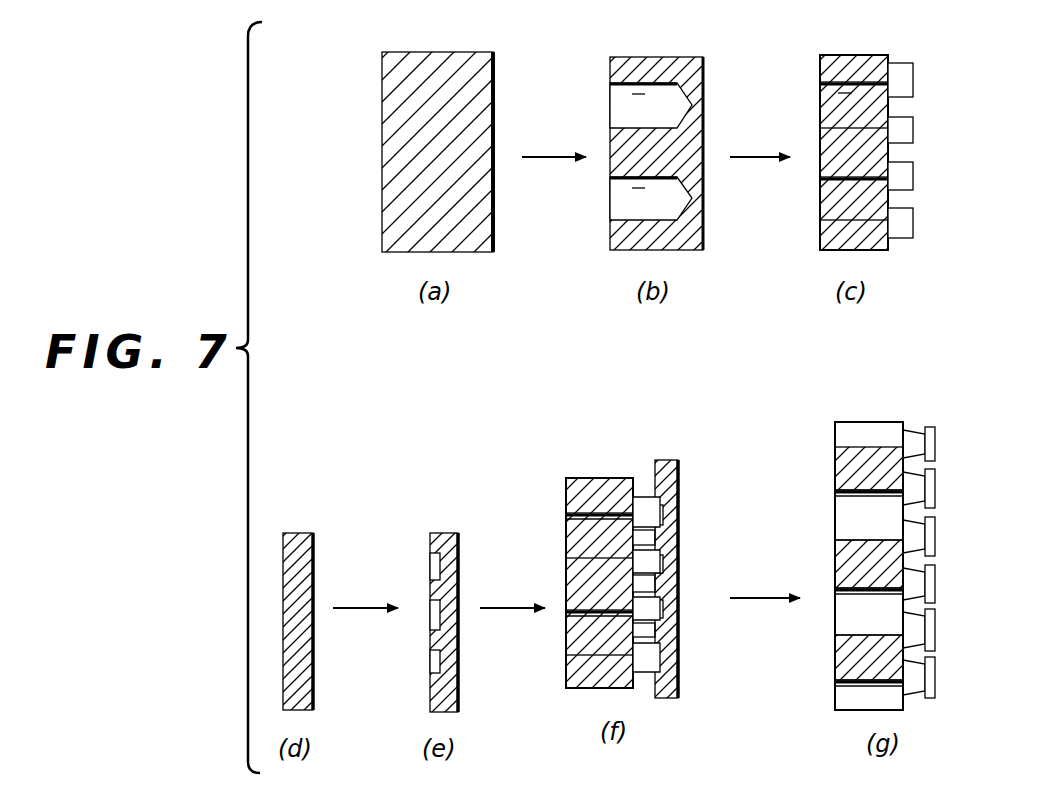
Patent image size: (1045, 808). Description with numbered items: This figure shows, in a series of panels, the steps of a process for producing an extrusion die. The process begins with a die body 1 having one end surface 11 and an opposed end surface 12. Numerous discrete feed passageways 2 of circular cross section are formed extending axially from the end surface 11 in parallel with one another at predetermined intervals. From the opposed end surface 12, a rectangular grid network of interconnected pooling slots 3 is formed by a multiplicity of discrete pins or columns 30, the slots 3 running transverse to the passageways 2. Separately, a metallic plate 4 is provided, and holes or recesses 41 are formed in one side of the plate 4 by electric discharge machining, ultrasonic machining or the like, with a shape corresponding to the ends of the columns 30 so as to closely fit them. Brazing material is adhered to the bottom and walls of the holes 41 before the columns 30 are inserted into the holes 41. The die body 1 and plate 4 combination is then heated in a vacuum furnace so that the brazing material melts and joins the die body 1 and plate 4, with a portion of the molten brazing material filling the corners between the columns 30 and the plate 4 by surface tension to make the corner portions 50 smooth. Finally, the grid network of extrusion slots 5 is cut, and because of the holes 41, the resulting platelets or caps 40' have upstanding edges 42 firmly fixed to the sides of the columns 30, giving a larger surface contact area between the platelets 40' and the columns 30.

The die body 1 is at (888, 254).
The feed passageways 2 is at (610, 90).
The pooling slots 3 is at (905, 100).
The plate 4 is at (300, 576).
The extrusion slots 5 is at (930, 464).
The end surface 11 is at (397, 160).
The opposed end surface 12 is at (493, 78).
The columns 30 is at (903, 130).
The platelets 40' is at (952, 560).
The holes 41 is at (433, 618).
The upstanding edges 42 is at (932, 668).
The smooth converging transition 50 is at (645, 492).